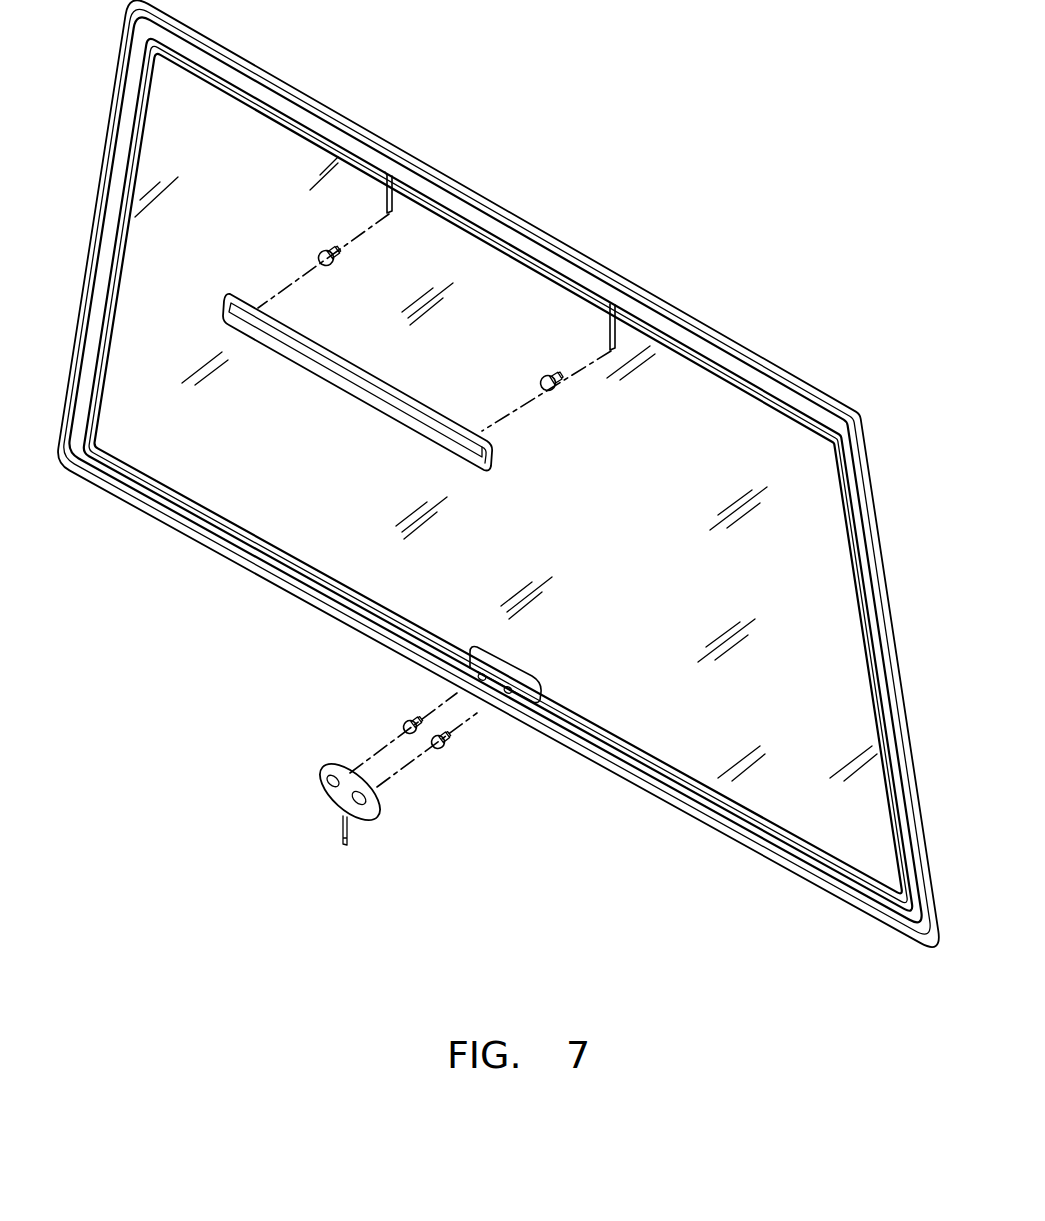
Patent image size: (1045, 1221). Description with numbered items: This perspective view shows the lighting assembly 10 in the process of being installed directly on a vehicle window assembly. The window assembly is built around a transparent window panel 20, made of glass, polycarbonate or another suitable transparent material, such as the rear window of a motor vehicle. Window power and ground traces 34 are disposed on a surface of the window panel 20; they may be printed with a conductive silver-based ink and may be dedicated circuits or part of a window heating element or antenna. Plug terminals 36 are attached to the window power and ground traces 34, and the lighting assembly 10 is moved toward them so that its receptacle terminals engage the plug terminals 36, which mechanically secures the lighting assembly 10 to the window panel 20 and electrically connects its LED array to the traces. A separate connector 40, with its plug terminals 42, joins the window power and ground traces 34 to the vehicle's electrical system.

The lighting assembly 10 is at (363, 375).
The window panel 20 is at (203, 440).
The window power and ground traces 34 is at (314, 126).
The plug terminals 36 is at (316, 258).
The connector 40 is at (333, 798).
The plug terminals 42 is at (448, 745).